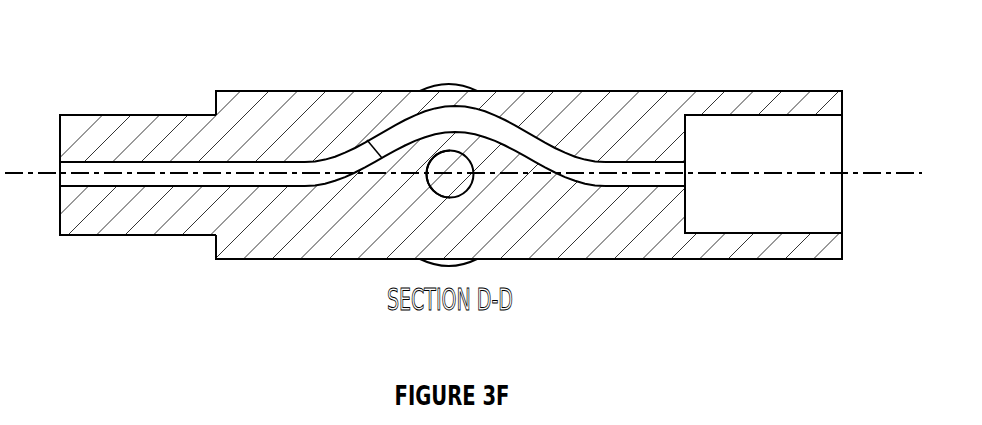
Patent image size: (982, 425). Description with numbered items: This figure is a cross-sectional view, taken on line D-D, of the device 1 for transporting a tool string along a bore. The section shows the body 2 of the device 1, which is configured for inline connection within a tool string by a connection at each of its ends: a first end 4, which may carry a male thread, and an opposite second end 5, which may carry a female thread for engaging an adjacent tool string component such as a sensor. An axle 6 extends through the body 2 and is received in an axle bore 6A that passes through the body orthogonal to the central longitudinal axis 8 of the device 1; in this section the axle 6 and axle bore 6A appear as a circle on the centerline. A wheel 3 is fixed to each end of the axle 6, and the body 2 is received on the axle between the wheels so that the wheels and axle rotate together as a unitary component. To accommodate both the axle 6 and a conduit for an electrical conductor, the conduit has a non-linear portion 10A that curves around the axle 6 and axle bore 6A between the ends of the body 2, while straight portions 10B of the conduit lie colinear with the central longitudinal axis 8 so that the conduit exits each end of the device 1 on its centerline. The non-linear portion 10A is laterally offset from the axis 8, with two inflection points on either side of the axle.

The device 1 is at (266, 69).
The body 2 is at (278, 233).
The wheel 3 is at (475, 83).
The first end 4 is at (102, 215).
The second end 5 is at (800, 203).
The axle 6 is at (458, 180).
The axle bore 6A is at (432, 188).
The central longitudinal axis 8 is at (878, 168).
The non-linear portion 10A is at (452, 123).
The straight channel section 10B is at (213, 172).